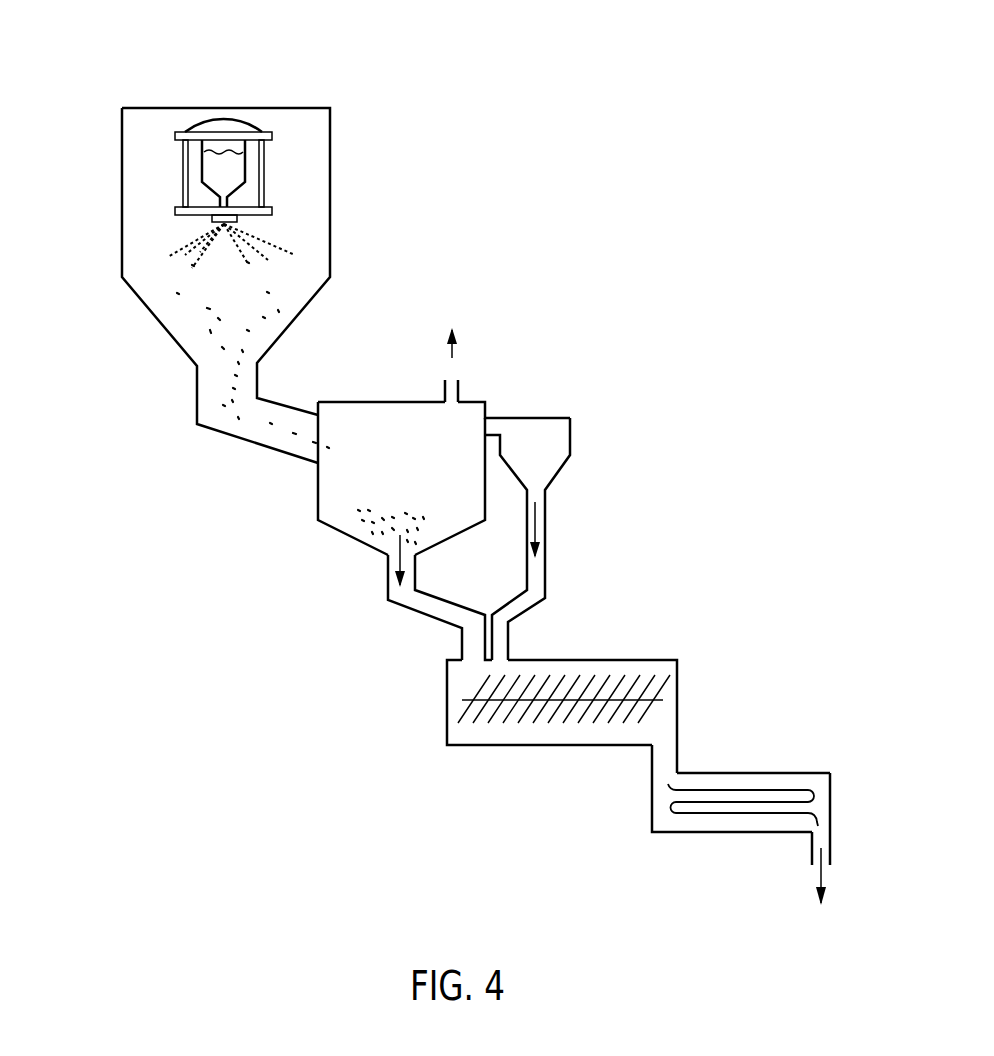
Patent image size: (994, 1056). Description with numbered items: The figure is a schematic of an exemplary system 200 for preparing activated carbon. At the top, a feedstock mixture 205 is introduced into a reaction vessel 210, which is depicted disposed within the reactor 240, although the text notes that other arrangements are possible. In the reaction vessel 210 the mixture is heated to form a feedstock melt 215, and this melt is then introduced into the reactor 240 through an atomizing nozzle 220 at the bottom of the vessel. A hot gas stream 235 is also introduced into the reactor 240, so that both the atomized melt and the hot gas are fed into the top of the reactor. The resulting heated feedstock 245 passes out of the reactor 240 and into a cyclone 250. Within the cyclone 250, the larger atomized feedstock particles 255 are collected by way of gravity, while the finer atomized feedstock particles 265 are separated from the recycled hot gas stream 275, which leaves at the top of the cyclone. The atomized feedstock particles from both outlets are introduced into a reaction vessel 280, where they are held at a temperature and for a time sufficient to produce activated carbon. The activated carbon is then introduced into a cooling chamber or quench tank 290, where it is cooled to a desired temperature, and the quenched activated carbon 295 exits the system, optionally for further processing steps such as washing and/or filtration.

The system 200 is at (378, 68).
The feedstock mixture 205 is at (226, 128).
The reaction vessel 210 is at (267, 173).
The feedstock melt 215 is at (243, 163).
The atomizing nozzle 220 is at (237, 218).
The hot gas stream 235 is at (184, 236).
The reactor 240 is at (138, 300).
The heated feedstock 245 is at (207, 344).
The cyclone 250 is at (420, 477).
The larger atomized feedstock particles 255 is at (400, 536).
The finer atomized feedstock particles 265 is at (538, 518).
The recycled hot gas stream 275 is at (452, 358).
The reaction vessel 280 is at (632, 657).
The cooling chamber or quench tank 290 is at (795, 773).
The quenched activated carbon 295 is at (832, 876).